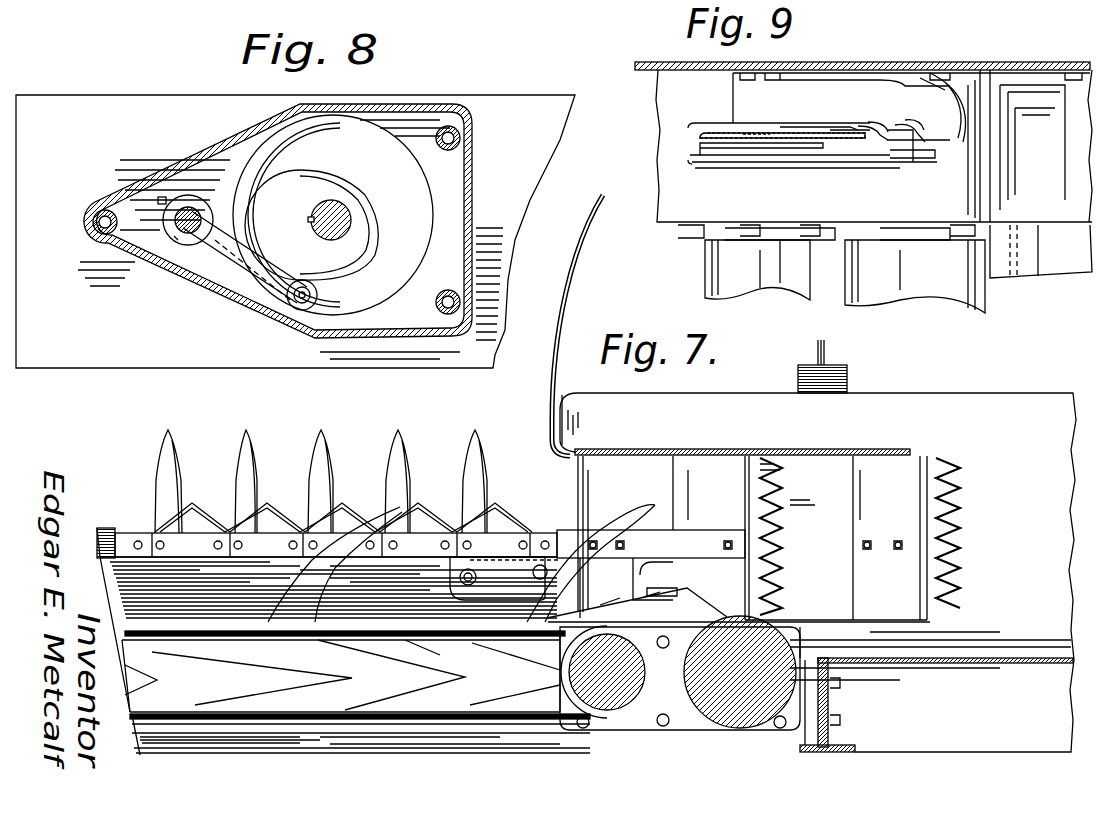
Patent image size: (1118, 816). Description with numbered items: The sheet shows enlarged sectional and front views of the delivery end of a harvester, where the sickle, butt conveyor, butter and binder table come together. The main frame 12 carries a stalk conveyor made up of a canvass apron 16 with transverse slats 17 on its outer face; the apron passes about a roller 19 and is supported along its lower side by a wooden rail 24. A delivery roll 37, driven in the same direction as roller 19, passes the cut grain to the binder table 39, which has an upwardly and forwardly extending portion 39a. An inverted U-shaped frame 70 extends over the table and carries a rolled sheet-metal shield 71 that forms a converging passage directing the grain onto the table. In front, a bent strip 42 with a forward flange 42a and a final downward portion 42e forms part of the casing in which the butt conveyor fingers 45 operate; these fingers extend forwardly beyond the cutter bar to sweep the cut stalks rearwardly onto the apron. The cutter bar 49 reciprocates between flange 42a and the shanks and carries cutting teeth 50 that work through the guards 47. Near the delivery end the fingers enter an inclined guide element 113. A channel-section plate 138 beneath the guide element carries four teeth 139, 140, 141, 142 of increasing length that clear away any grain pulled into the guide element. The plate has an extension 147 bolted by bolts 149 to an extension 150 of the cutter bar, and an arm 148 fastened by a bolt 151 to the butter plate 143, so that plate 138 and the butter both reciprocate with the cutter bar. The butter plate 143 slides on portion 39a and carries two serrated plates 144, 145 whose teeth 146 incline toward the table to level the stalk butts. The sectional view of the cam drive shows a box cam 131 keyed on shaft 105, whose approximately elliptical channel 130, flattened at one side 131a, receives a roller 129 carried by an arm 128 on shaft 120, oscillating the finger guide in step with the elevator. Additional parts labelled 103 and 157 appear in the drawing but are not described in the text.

In FIG. 9, the main frame 12 is at (1028, 278).
In FIG. 7, the main frame 12 is at (876, 752).
In FIG. 7, the canvass apron 16 is at (200, 645).
In FIG. 7, the slats 17 is at (280, 642).
In FIG. 9, the roller 19 is at (770, 298).
In FIG. 7, the roller 19 is at (590, 690).
In FIG. 7, the wooden rail 24 is at (134, 742).
In FIG. 9, the delivery roll 37 is at (895, 300).
In FIG. 7, the delivery roll 37 is at (730, 722).
In FIG. 7, the binder table 39 is at (1030, 426).
In FIG. 7, the upwardly and forwardly extending portion of binder table 39a is at (937, 398).
In FIG. 9, the strip 42 is at (670, 62).
In FIG. 7, the flange 42a is at (240, 567).
In FIG. 8, the downward portion of strip 42e is at (142, 88).
In FIG. 9, the fingers 45 is at (818, 148).
In FIG. 7, the fingers 45 is at (620, 520).
In FIG. 7, the guards 47 is at (172, 460).
In FIG. 7, the cutter bar 49 is at (127, 535).
In FIG. 7, the cutting members or teeth 50 is at (162, 520).
In FIG. 7, the frame 70 is at (798, 374).
In FIG. 7, the shield 71 is at (562, 358).
In FIG. 8, the arm 103 is at (212, 296).
In FIG. 8, the shaft 105 is at (329, 233).
In FIG. 9, the finger receiving and guide element 113 is at (790, 133).
In FIG. 8, the shaft 120 is at (178, 232).
In FIG. 8, the arm 128 is at (234, 275).
In FIG. 8, the roller 129 is at (310, 313).
In FIG. 8, the channel 130 is at (341, 305).
In FIG. 8, the box cam 131 is at (441, 188).
In FIG. 8, the flattened side of channel 131a is at (378, 205).
In FIG. 9, the plate 138 is at (832, 95).
In FIG. 9, the tooth 139 is at (836, 130).
In FIG. 9, the tooth 140 is at (872, 128).
In FIG. 9, the tooth 141 is at (908, 128).
In FIG. 9, the tooth 142 is at (958, 140).
In FIG. 7, the plate 143 is at (820, 472).
In FIG. 7, the plate 144 is at (730, 470).
In FIG. 7, the plate 145 is at (903, 472).
In FIG. 7, the teeth 146 is at (957, 538).
In FIG. 7, the extension 147 is at (590, 520).
In FIG. 7, the arm 148 is at (729, 527).
In FIG. 7, the bolts 149 is at (622, 556).
In FIG. 7, the extension of cutter bar 150 is at (543, 533).
In FIG. 7, the bolt 151 is at (745, 551).
In FIG. 9, the knife head 157 is at (858, 166).